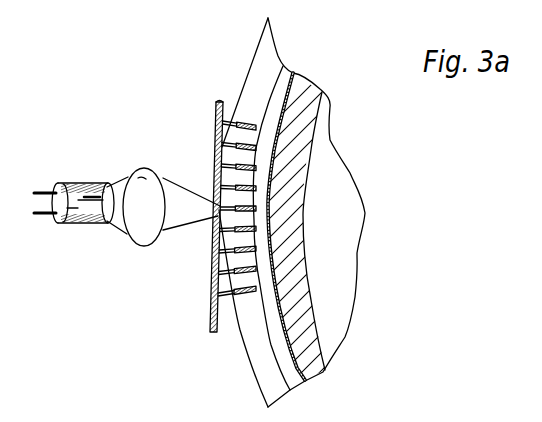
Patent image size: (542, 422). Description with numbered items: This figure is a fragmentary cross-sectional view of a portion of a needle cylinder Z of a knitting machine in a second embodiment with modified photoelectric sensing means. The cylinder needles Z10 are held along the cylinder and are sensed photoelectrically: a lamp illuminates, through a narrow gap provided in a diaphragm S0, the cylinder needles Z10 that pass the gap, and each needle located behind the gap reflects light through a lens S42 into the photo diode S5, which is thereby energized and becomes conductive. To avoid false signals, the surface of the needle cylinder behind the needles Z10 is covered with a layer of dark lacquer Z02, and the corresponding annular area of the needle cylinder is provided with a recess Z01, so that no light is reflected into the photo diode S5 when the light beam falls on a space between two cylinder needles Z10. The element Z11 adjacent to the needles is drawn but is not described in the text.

The photo diode S5 is at (72, 222).
The lens S42 is at (142, 244).
The diaphragm S0 is at (218, 165).
The mask plate Z11 is at (226, 119).
The cylinder needles Z10 is at (247, 121).
The optical body Z is at (315, 92).
The recess Z01 is at (272, 338).
The dark lacquer layer Z02 is at (272, 245).